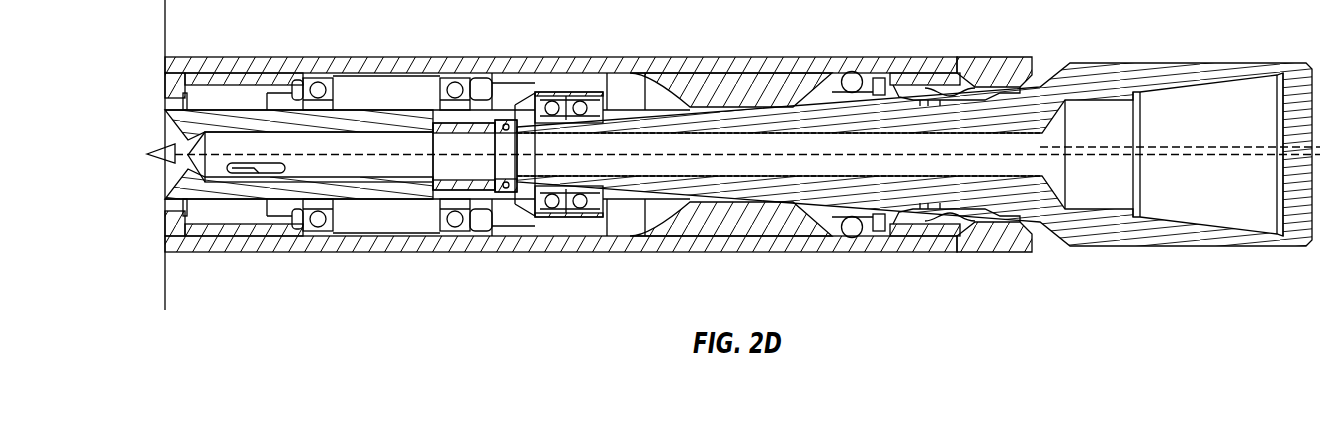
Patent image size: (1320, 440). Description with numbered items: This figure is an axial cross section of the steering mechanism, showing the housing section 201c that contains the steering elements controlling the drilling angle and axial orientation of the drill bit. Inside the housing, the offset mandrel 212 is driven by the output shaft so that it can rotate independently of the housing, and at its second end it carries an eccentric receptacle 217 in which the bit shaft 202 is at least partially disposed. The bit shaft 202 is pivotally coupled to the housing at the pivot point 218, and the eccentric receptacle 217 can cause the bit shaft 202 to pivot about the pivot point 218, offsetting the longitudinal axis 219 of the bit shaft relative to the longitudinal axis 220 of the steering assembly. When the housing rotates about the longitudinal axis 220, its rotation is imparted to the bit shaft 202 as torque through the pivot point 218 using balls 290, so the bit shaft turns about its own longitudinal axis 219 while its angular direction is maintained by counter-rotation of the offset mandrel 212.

The housing section 201c is at (253, 254).
The bit shaft 202 is at (765, 192).
The offset mandrel 212 is at (388, 118).
The eccentric receptacle 217 is at (566, 222).
The pivot point 218 is at (833, 102).
The longitudinal axis of bit shaft 219 is at (1192, 148).
The longitudinal axis of steering assembly 220 is at (1167, 157).
The balls 290 is at (852, 78).